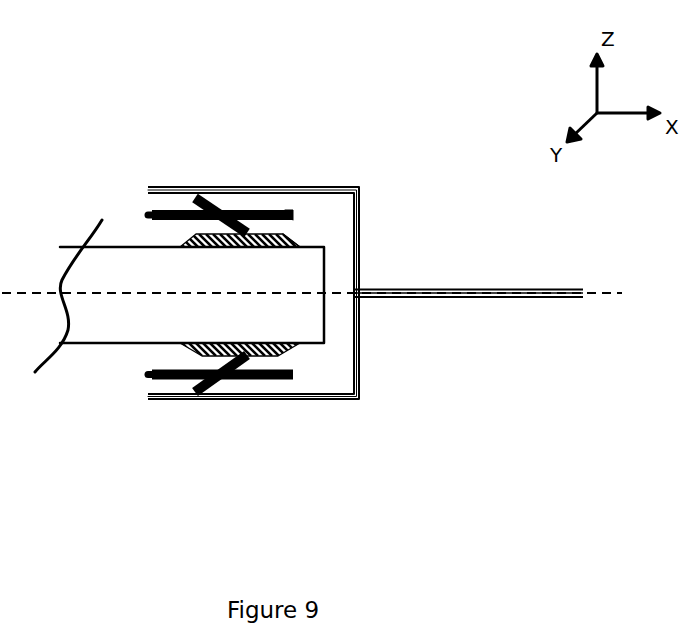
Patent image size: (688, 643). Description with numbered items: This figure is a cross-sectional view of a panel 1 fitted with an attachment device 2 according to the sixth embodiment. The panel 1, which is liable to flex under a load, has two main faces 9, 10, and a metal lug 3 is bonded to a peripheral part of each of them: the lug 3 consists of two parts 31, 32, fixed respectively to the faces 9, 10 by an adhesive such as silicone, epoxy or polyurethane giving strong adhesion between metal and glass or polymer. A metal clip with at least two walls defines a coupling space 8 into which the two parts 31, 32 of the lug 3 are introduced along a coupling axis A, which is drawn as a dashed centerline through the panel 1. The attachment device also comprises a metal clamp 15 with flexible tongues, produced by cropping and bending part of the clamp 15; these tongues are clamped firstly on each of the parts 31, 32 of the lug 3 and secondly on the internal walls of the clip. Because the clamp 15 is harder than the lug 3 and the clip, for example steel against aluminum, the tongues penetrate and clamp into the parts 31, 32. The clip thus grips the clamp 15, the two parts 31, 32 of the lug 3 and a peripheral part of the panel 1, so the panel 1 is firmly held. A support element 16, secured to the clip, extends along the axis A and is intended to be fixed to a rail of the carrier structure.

The panel 1 is at (112, 278).
The attachment device 2 is at (426, 158).
The lug 3 is at (272, 226).
The coupling space 8 is at (326, 377).
The main face 9 is at (97, 242).
The main face 10 is at (80, 345).
The metal clamp 15 is at (292, 208).
The support element 16 is at (427, 288).
The lug part 31 is at (284, 234).
The lug part 32 is at (283, 352).
The coupling axis A is at (323, 298).